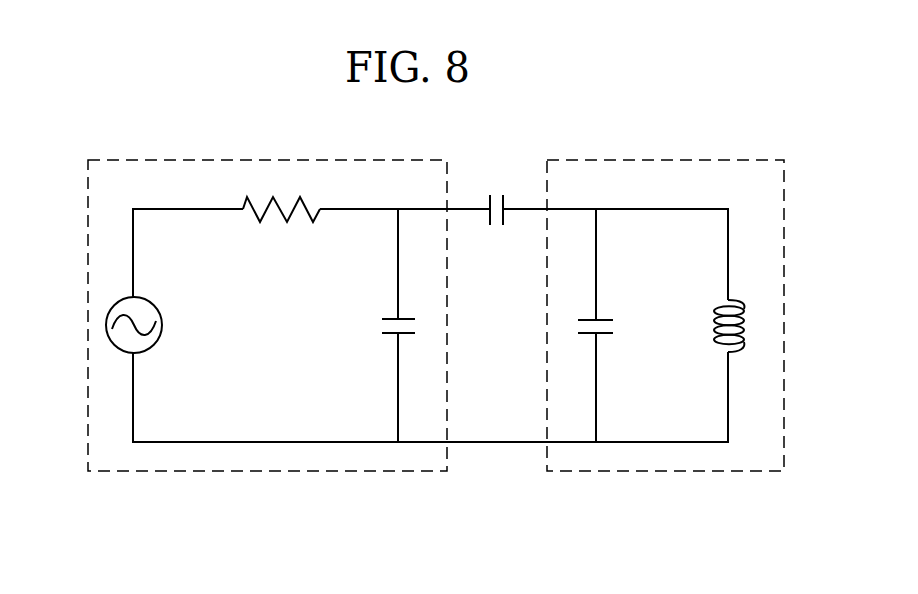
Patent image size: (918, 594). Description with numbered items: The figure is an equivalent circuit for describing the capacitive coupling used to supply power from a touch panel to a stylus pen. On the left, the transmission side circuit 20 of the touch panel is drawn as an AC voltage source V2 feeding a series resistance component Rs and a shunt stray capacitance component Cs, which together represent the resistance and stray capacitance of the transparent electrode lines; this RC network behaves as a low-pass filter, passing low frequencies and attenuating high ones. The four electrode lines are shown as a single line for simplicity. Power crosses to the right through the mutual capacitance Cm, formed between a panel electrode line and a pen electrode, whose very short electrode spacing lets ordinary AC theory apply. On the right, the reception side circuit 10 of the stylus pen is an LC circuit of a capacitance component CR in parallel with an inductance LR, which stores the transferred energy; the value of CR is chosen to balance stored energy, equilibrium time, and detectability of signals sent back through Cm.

The reception side circuit 10 is at (665, 348).
The transmission side circuit 20 is at (267, 348).
The AC voltage source V2 is at (147, 325).
The resistance component Rs is at (281, 196).
The stray capacitance component Cs is at (384, 325).
The mutual capacitance Cm is at (497, 196).
The capacitance component of the LC circuit CR is at (610, 325).
The inductance component of the LC circuit LR is at (742, 326).